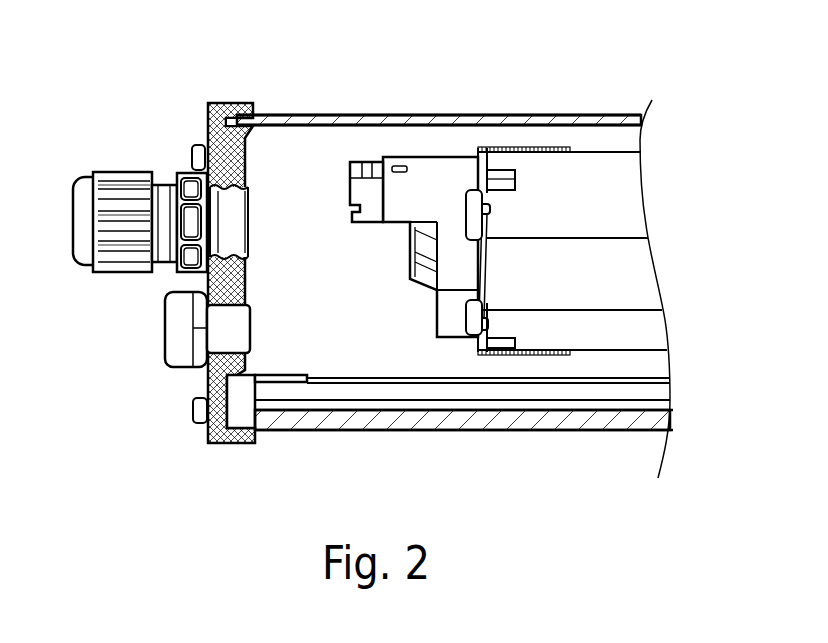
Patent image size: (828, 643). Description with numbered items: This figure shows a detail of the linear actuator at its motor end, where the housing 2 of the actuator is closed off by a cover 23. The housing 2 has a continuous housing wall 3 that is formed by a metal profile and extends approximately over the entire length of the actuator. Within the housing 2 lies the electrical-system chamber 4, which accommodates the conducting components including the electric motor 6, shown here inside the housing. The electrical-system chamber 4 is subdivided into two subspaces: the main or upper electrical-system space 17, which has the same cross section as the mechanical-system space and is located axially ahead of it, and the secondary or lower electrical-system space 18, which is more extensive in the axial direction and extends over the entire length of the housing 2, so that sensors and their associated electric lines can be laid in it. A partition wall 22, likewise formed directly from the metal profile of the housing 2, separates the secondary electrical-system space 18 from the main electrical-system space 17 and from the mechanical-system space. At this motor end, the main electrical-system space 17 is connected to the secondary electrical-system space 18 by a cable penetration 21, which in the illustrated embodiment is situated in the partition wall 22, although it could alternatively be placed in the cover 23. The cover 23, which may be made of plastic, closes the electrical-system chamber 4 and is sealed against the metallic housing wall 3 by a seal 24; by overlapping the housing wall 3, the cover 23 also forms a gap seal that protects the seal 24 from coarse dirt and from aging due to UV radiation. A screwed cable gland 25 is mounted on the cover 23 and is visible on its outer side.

The housing 2 is at (607, 85).
The housing wall 3 is at (484, 116).
The electrical-system chamber 4 is at (455, 232).
The main electrical-system space 17 is at (316, 150).
The secondary electrical-system space 18 is at (600, 400).
The electric motor 6 is at (632, 238).
The cable penetration 21 is at (280, 378).
The partition wall 22 is at (433, 381).
The cover 23 is at (225, 135).
The seal 24 is at (230, 418).
The screwed cable gland 25 is at (123, 222).